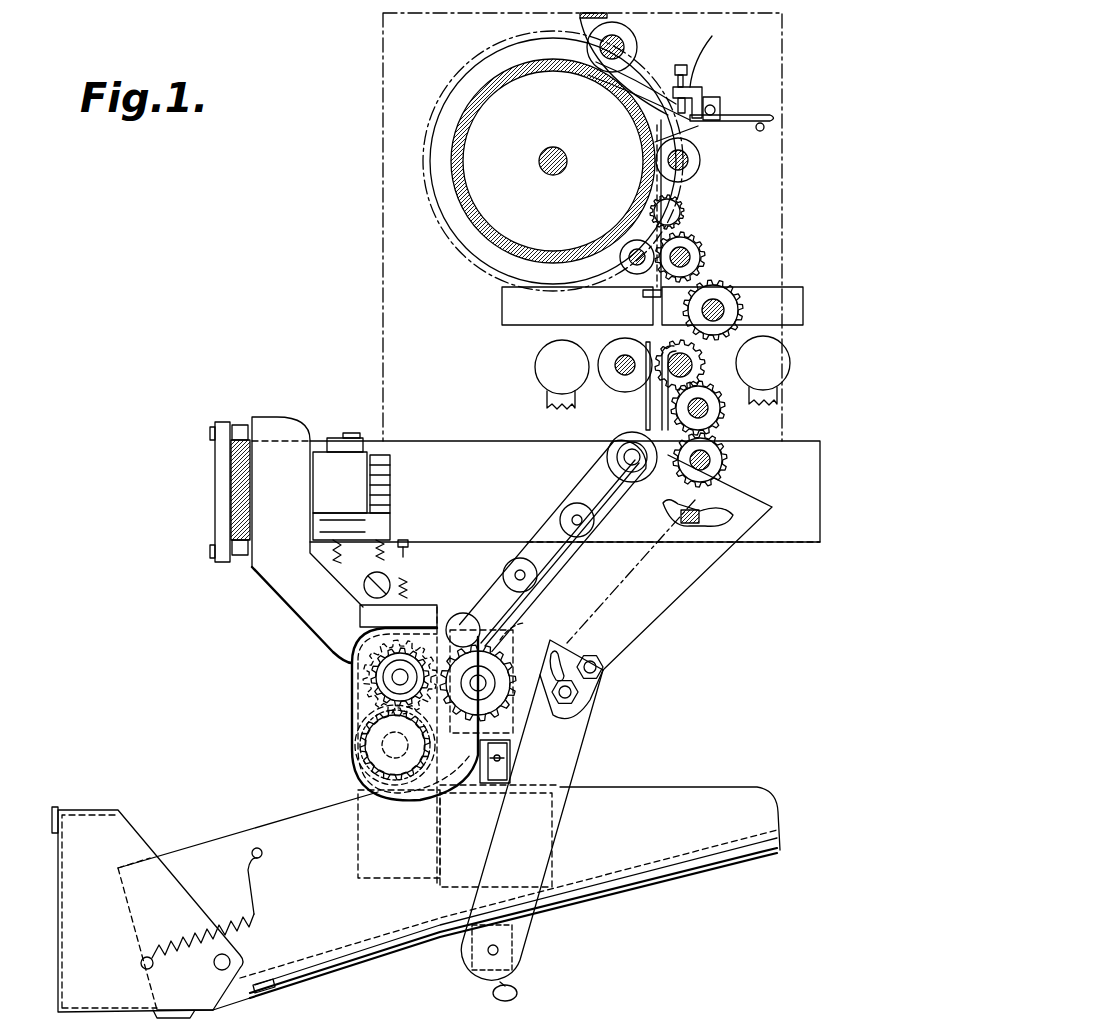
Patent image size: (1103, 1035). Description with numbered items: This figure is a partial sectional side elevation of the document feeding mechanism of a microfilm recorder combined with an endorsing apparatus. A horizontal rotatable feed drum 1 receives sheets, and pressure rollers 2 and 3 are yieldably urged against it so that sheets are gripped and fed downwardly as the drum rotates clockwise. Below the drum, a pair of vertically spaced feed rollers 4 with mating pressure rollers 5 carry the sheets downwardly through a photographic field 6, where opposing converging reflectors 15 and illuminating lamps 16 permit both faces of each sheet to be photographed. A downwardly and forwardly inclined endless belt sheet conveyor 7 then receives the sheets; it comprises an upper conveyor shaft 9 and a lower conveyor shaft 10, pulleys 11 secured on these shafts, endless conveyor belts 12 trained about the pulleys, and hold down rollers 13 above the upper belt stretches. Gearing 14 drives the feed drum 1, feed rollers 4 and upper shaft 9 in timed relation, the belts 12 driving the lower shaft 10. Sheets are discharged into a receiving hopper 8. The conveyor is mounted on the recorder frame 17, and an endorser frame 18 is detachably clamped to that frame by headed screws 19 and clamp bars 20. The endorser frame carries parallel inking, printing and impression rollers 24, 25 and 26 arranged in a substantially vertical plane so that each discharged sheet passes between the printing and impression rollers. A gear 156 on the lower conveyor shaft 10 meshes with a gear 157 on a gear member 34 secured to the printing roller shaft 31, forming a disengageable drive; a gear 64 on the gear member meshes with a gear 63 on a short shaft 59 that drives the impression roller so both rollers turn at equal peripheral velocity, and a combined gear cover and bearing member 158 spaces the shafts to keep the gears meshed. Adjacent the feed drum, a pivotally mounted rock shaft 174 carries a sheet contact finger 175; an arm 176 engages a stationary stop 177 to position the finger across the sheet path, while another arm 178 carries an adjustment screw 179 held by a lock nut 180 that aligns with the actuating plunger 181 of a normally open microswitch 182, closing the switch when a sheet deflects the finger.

The feed drum 1 is at (462, 113).
The pressure roller 2 is at (633, 43).
The pressure roller 3 is at (694, 172).
The feed rollers 4 is at (705, 263).
The pressure rollers 5 is at (622, 262).
The photographic field 6 is at (655, 300).
The endless belt sheet conveyor 7 is at (640, 572).
The receiving hopper 8 is at (293, 846).
The upper conveyor shaft 9 is at (730, 462).
The lower conveyor shaft 10 is at (486, 676).
The pulleys 11 is at (662, 505).
The endless conveyor belts 12 is at (563, 560).
The hold down rollers 13 is at (608, 452).
The gearing 14 is at (745, 308).
The converging reflectors 15 is at (502, 303).
The illuminating lamps 16 is at (535, 371).
The recorder frame 17 is at (408, 441).
The endorser frame 18 is at (283, 590).
The headed screws 19 is at (245, 425).
The clamp bars 20 is at (215, 458).
The inking roller 24 is at (447, 580).
The printing roller 25 is at (358, 632).
The impression roller 26 is at (360, 770).
The printing roller shaft 31 is at (392, 677).
The gear member 34 is at (378, 690).
The short shaft 59 is at (365, 781).
The gear 63 is at (352, 736).
The gear 64 is at (363, 668).
The gear 156 is at (507, 713).
The gear 157 is at (398, 616).
The combined gear cover and bearing member 158 is at (350, 742).
The rock shaft 174 is at (705, 98).
The sheet contact finger 175 is at (690, 129).
The arm 176 is at (746, 115).
The stationary stop 177 is at (759, 131).
The arm 178 is at (708, 96).
The adjustment screw 179 is at (718, 53).
The lock nut 180 is at (676, 68).
The actuating plunger 181 is at (640, 88).
The microswitch 182 is at (650, 111).